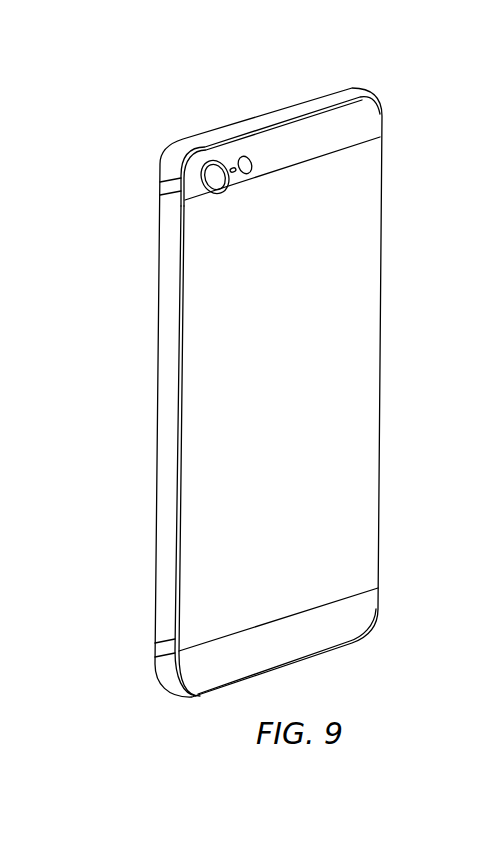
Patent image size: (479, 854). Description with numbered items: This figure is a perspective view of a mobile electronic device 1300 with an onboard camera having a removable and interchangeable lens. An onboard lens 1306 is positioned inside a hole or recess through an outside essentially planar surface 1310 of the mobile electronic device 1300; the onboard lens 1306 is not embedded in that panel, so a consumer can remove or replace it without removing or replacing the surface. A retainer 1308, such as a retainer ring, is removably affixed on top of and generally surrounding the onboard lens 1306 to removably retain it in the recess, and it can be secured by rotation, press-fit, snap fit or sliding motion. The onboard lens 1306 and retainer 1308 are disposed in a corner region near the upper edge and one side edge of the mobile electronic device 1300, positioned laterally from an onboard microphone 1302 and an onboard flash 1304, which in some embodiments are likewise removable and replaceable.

The mobile electronic device 1300 is at (166, 215).
The onboard microphone 1302 is at (233, 160).
The onboard flash 1304 is at (248, 150).
The onboard lens 1306 is at (210, 171).
The retainer 1308 is at (223, 187).
The planar surface 1310 is at (350, 451).